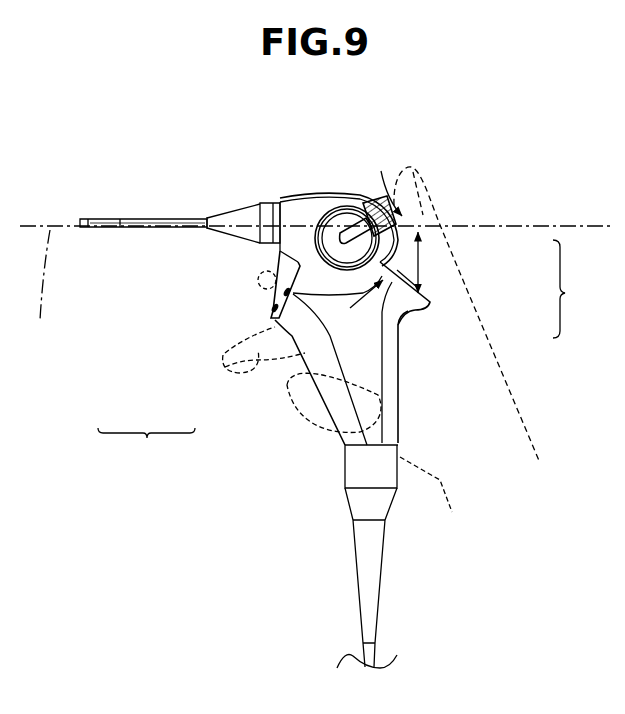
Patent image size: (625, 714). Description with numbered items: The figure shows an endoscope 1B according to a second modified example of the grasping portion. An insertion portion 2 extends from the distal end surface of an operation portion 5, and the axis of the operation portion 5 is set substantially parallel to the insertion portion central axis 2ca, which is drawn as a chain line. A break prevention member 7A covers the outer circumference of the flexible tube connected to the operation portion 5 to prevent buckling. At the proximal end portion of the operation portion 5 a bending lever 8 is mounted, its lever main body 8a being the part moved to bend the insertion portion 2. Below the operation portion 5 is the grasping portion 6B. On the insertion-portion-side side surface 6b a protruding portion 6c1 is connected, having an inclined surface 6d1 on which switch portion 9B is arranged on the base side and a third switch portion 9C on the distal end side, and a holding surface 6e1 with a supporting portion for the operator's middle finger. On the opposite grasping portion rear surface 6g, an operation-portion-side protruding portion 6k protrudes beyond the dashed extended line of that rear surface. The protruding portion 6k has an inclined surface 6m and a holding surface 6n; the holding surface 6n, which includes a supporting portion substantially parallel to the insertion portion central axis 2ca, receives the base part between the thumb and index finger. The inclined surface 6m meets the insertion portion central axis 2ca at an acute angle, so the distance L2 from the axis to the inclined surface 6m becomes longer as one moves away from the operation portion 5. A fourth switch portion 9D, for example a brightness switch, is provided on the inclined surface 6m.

The insertion portion 2 is at (127, 212).
The insertion portion central axis 2ca is at (42, 288).
The endoscope 1B is at (200, 210).
The break prevention member 7A is at (243, 205).
The operation portion 5 is at (322, 218).
The bending lever 8 is at (339, 218).
The lever main body 8a is at (377, 202).
The fourth switch portion 9D is at (387, 274).
The switch portion 9B is at (262, 275).
The third switch portion 9C is at (272, 308).
The inclined surface 6d1 is at (264, 318).
The holding surface 6e1 is at (281, 329).
The protruding portion 6c1 is at (146, 449).
The insertion-portion-side side surface 6b is at (327, 403).
The grasping portion 6B is at (367, 355).
The grasping portion rear surface 6g is at (403, 417).
The inclined surface 6m is at (432, 291).
The holding surface 6n is at (419, 319).
The operation-portion-side protruding portion 6k is at (573, 289).
The distance L2 is at (433, 262).